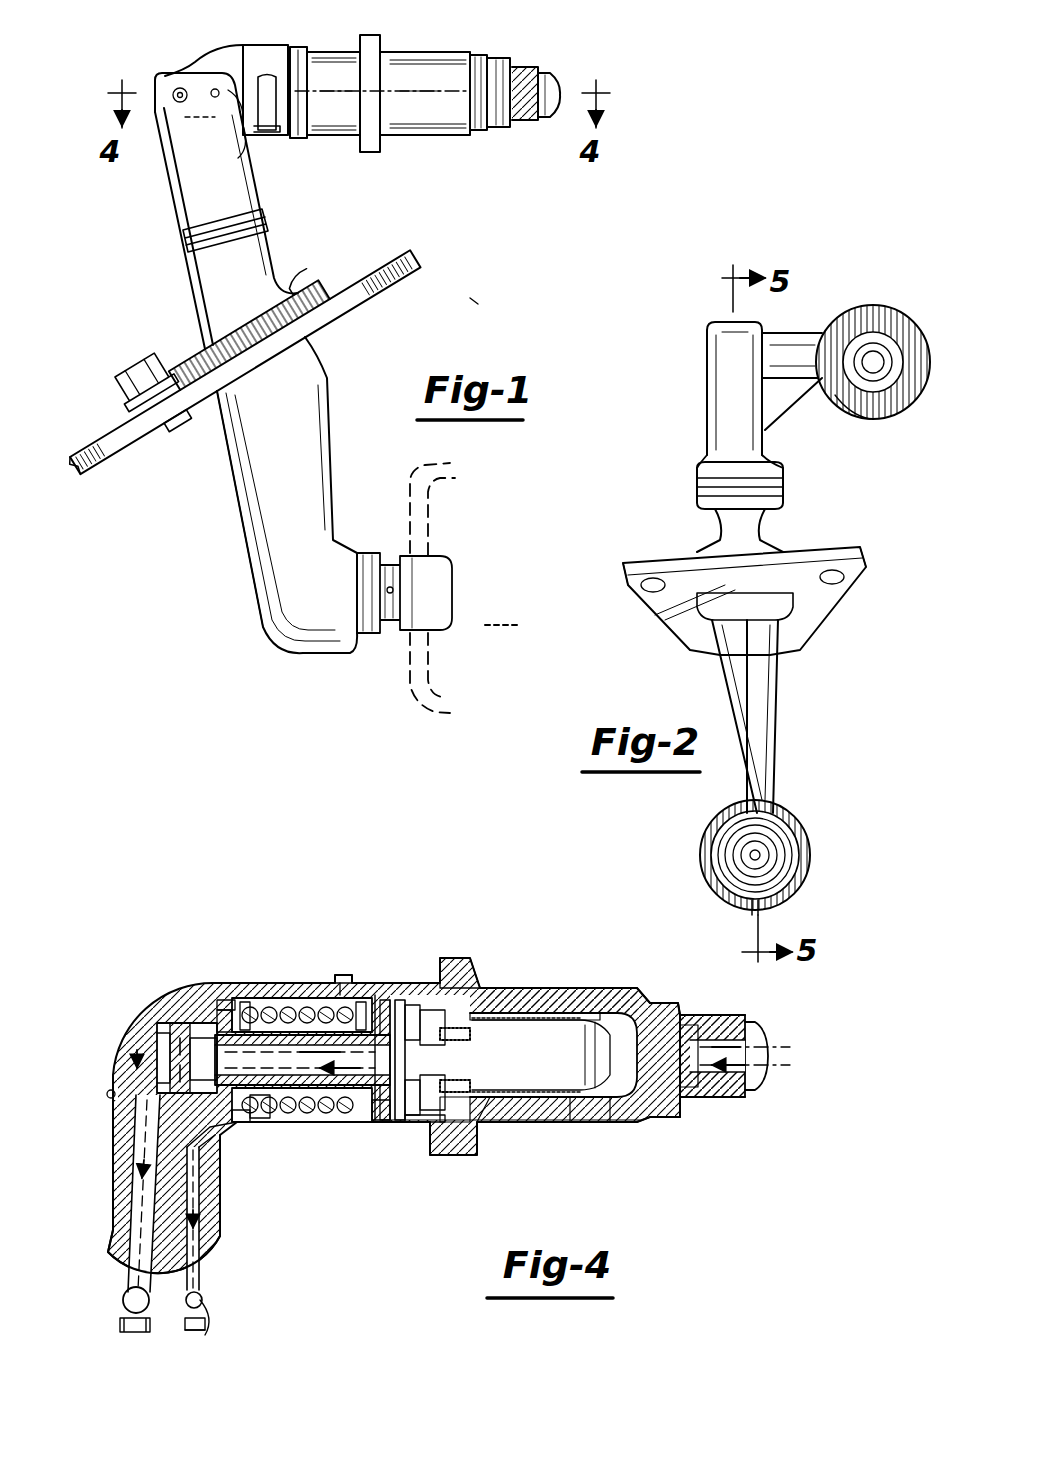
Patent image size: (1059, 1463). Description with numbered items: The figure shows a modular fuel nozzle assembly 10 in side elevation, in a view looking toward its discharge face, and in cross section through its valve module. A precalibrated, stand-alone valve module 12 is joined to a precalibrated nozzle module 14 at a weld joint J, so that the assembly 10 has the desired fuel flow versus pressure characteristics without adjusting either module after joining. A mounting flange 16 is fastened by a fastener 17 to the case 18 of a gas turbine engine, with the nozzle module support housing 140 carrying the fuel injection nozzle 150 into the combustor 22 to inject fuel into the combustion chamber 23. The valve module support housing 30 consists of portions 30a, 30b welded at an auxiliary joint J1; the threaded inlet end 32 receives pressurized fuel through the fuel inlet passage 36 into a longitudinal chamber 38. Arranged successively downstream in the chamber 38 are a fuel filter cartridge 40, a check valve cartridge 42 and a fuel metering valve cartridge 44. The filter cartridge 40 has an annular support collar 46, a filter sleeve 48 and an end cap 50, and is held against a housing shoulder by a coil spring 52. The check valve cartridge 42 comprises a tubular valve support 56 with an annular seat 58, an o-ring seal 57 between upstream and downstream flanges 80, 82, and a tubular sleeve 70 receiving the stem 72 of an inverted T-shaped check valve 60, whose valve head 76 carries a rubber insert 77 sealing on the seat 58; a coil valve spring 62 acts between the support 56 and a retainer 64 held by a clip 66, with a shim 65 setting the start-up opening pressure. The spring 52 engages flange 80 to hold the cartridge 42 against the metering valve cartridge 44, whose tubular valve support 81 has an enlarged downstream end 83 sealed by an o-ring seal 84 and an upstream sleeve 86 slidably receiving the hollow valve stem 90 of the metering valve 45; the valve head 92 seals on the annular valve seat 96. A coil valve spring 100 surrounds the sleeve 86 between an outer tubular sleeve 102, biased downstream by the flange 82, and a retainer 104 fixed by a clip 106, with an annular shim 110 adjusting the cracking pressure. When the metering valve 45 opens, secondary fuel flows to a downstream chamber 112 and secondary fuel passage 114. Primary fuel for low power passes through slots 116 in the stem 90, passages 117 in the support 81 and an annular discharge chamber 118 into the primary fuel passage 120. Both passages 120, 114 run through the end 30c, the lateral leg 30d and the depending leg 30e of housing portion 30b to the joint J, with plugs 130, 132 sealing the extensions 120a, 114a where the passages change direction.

In FIG. 1, the fuel nozzle assembly 10 is at (478, 300).
In FIG. 1, the valve module 12 is at (406, 50).
In FIG. 1, the nozzle module 14 is at (215, 592).
In FIG. 2, the nozzle module 14 is at (790, 772).
In FIG. 1, the mounting flange 16 is at (296, 290).
In FIG. 2, the mounting flange 16 is at (820, 605).
In FIG. 1, the fastener 17 is at (150, 360).
In FIG. 1, the case 18 is at (360, 293).
In FIG. 1, the combustor 22 is at (405, 493).
In FIG. 1, the combustion chamber 23 is at (502, 610).
In FIG. 1, the valve module support housing 30 is at (336, 148).
In FIG. 4, the valve module support housing 30 is at (400, 985).
In FIG. 1, the housing portion 30a is at (457, 58).
In FIG. 2, the housing portion 30a is at (850, 402).
In FIG. 4, the housing portion 30a is at (530, 1000).
In FIG. 4, the housing portion 30b is at (240, 995).
In FIG. 1, the end of housing portion 30c is at (220, 50).
In FIG. 4, the end of housing portion 30c is at (110, 1092).
In FIG. 1, the lateral leg 30d is at (178, 88).
In FIG. 2, the lateral leg 30d is at (785, 345).
In FIG. 4, the lateral leg 30d is at (118, 1198).
In FIG. 1, the depending leg 30e is at (205, 185).
In FIG. 2, the depending leg 30e is at (730, 395).
In FIG. 1, the threaded inlet end 32 is at (530, 62).
In FIG. 2, the threaded inlet end 32 is at (885, 345).
In FIG. 4, the threaded inlet end 32 is at (720, 1012).
In FIG. 4, the fuel inlet passage 36 is at (740, 1045).
In FIG. 4, the longitudinal chamber 38 is at (580, 1125).
In FIG. 4, the fuel filter cartridge 40 is at (555, 1000).
In FIG. 4, the check valve cartridge 42 is at (470, 1125).
In FIG. 4, the fuel metering valve cartridge 44 is at (172, 1030).
In FIG. 4, the metering valve 45 is at (182, 1078).
In FIG. 4, the annular support collar 46 is at (440, 1010).
In FIG. 4, the filter sleeve 48 is at (510, 1015).
In FIG. 4, the end cap 50 is at (660, 1118).
In FIG. 4, the coil spring 52 is at (440, 1150).
In FIG. 4, the tubular valve support 56 is at (400, 1122).
In FIG. 4, the o-ring seal 57 is at (398, 1122).
In FIG. 4, the annular seat 58 is at (465, 975).
In FIG. 4, the check valve 60 is at (420, 1122).
In FIG. 4, the coil valve spring 62 is at (455, 1122).
In FIG. 4, the retainer 64 is at (560, 1122).
In FIG. 4, the shim 65 is at (475, 1034).
In FIG. 4, the clip 66 is at (475, 1086).
In FIG. 4, the tubular sleeve 70 is at (530, 1122).
In FIG. 4, the valve stem 72 is at (440, 1040).
In FIG. 4, the valve head 76 is at (385, 1000).
In FIG. 4, the rubber insert 77 is at (388, 1085).
In FIG. 4, the upstream flange 80 is at (412, 1120).
In FIG. 4, the tubular valve support 81 is at (245, 1005).
In FIG. 4, the downstream flange 82 is at (412, 1005).
In FIG. 4, the enlarged downstream end 83 is at (224, 1020).
In FIG. 4, the o-ring seal 84 is at (226, 1002).
In FIG. 4, the upstream sleeve 86 is at (280, 1035).
In FIG. 4, the hollow valve stem 90 is at (300, 1010).
In FIG. 4, the valve head 92 is at (195, 1075).
In FIG. 4, the annular valve seat 96 is at (260, 1000).
In FIG. 4, the coil valve spring 100 is at (440, 1122).
In FIG. 4, the outer tubular sleeve 102 is at (325, 1000).
In FIG. 4, the retainer 104 is at (343, 985).
In FIG. 4, the clip 106 is at (375, 1122).
In FIG. 4, the annular shim 110 is at (320, 1060).
In FIG. 4, the downstream chamber 112 is at (157, 1036).
In FIG. 4, the secondary fuel passage 114 is at (145, 1148).
In FIG. 4, the passage extension 114a is at (125, 1318).
In FIG. 4, the slots 116 is at (135, 1050).
In FIG. 4, the passages 117 is at (240, 1122).
In FIG. 4, the annular discharge chamber 118 is at (255, 1120).
In FIG. 4, the primary fuel passage 120 is at (205, 1238).
In FIG. 4, the passage extension 120a is at (205, 1300).
In FIG. 1, the plug 130 is at (178, 108).
In FIG. 4, the plug 130 is at (140, 1335).
In FIG. 1, the plug 132 is at (234, 152).
In FIG. 4, the plug 132 is at (195, 1340).
In FIG. 1, the nozzle module support housing 140 is at (230, 515).
In FIG. 1, the fuel injection nozzle 150 is at (450, 558).
In FIG. 2, the fuel injection nozzle 150 is at (710, 850).
In FIG. 1, the joint J is at (170, 242).
In FIG. 2, the joint J is at (690, 495).
In FIG. 1, the auxiliary joint J1 is at (302, 52).
In FIG. 4, the auxiliary joint J1 is at (365, 962).